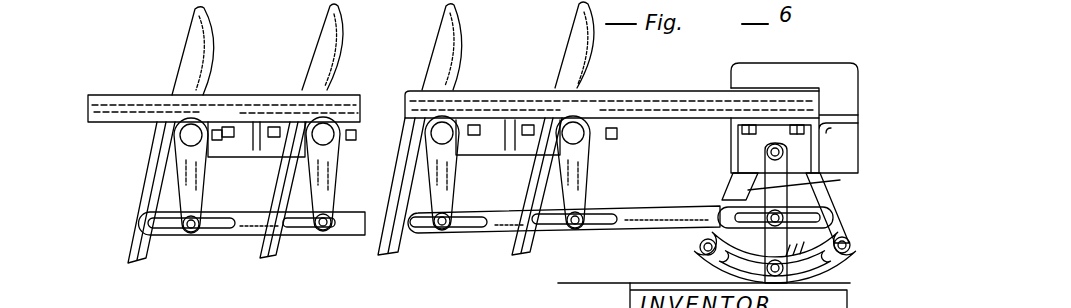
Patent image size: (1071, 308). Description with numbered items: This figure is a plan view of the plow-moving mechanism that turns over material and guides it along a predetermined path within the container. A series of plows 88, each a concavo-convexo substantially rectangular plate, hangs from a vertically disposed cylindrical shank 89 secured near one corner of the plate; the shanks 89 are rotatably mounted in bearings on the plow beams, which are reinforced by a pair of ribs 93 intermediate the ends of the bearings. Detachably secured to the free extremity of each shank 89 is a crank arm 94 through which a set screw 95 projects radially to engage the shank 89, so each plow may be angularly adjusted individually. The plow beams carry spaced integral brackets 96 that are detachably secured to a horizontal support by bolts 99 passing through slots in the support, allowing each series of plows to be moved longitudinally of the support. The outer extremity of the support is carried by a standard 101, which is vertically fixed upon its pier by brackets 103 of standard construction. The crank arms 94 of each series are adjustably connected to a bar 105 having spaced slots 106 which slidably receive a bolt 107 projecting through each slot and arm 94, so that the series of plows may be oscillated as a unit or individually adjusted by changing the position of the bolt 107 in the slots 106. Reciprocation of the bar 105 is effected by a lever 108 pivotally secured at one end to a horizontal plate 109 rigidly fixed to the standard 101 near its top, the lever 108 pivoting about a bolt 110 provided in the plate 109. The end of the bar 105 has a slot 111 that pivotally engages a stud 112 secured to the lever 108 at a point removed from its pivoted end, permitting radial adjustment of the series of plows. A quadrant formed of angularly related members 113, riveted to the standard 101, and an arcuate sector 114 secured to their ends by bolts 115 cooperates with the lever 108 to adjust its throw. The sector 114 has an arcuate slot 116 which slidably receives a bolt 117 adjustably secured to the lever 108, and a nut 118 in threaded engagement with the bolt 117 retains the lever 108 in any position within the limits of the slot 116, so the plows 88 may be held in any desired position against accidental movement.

The plows 88 is at (322, 20).
The cylindrical shank 89 is at (320, 130).
The ribs 93 is at (412, 134).
The crank arm 94 is at (598, 160).
The set screw 95 is at (618, 133).
The brackets 96 is at (509, 142).
The bolts 99 is at (283, 150).
The standards 101 is at (813, 125).
The brackets 103 is at (820, 73).
The bar 105 is at (324, 233).
The slots 106 is at (478, 228).
The bolt 107 is at (193, 233).
The lever 108 is at (822, 185).
The horizontal plate 109 is at (797, 147).
The bolts 110 is at (765, 152).
The slot 111 is at (704, 230).
The stud 112 is at (832, 214).
The angularly related members 113 is at (720, 212).
The arcuate sector 114 is at (838, 264).
The bolts 115 is at (700, 250).
The arcuate slot 116 is at (722, 268).
The bolt 117 is at (803, 241).
The nut 118 is at (760, 262).